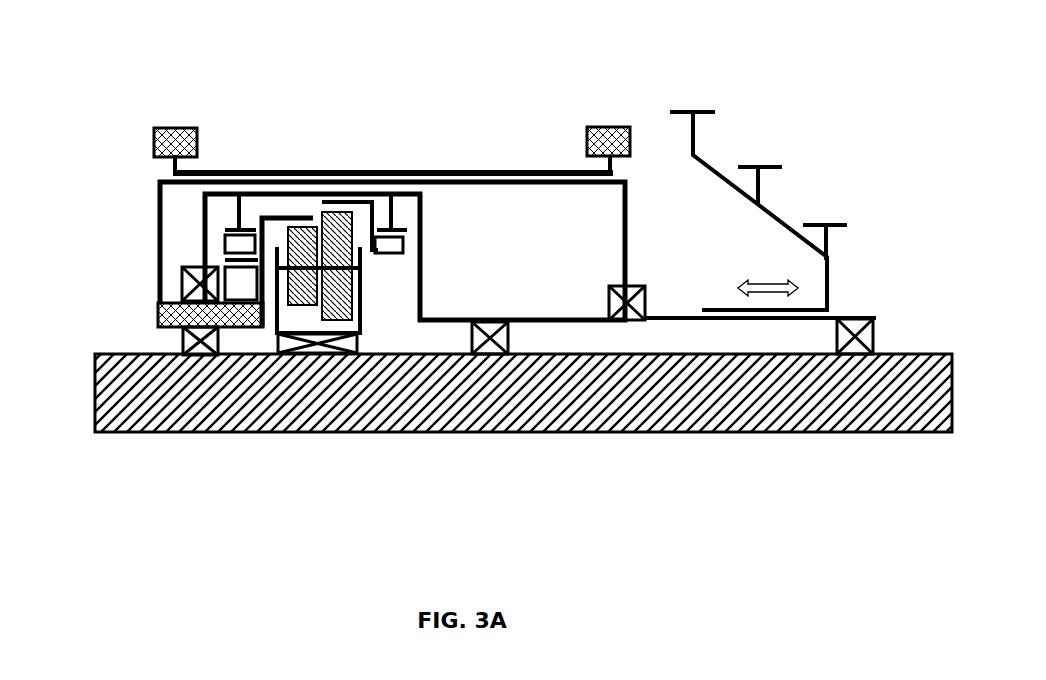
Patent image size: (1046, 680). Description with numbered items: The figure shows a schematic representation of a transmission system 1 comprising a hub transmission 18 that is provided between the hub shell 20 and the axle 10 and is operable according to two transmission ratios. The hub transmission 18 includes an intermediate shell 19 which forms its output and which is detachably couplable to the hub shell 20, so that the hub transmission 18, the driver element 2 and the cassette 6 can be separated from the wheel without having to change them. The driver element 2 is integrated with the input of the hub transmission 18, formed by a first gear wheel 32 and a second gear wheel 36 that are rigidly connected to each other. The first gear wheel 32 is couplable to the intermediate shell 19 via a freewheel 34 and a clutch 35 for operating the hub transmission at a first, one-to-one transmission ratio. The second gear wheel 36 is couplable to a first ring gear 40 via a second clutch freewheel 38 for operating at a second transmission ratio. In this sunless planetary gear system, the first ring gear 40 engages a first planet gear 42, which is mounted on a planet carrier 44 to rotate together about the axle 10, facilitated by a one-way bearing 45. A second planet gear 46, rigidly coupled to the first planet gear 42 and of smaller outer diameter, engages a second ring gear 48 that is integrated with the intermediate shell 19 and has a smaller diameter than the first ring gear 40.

The transmission system 1 is at (88, 82).
The driver element 2 is at (851, 310).
The cassette 6 is at (721, 157).
The axle 10 is at (662, 440).
The hub transmission 18 is at (313, 208).
The intermediate shell 19 is at (559, 176).
The hub shell 20 is at (511, 168).
The first gear wheel 32 is at (236, 209).
The freewheel 34 is at (221, 241).
The clutch 35 is at (221, 283).
The second gear wheel 36 is at (403, 209).
The second clutch freewheel 38 is at (392, 260).
The first ring gear 40 is at (359, 194).
The first planet gear 42 is at (333, 325).
The planet carrier 44 is at (346, 275).
The one-way bearing 45 is at (306, 359).
The second planet gear 46 is at (299, 312).
The second ring gear 48 is at (282, 210).